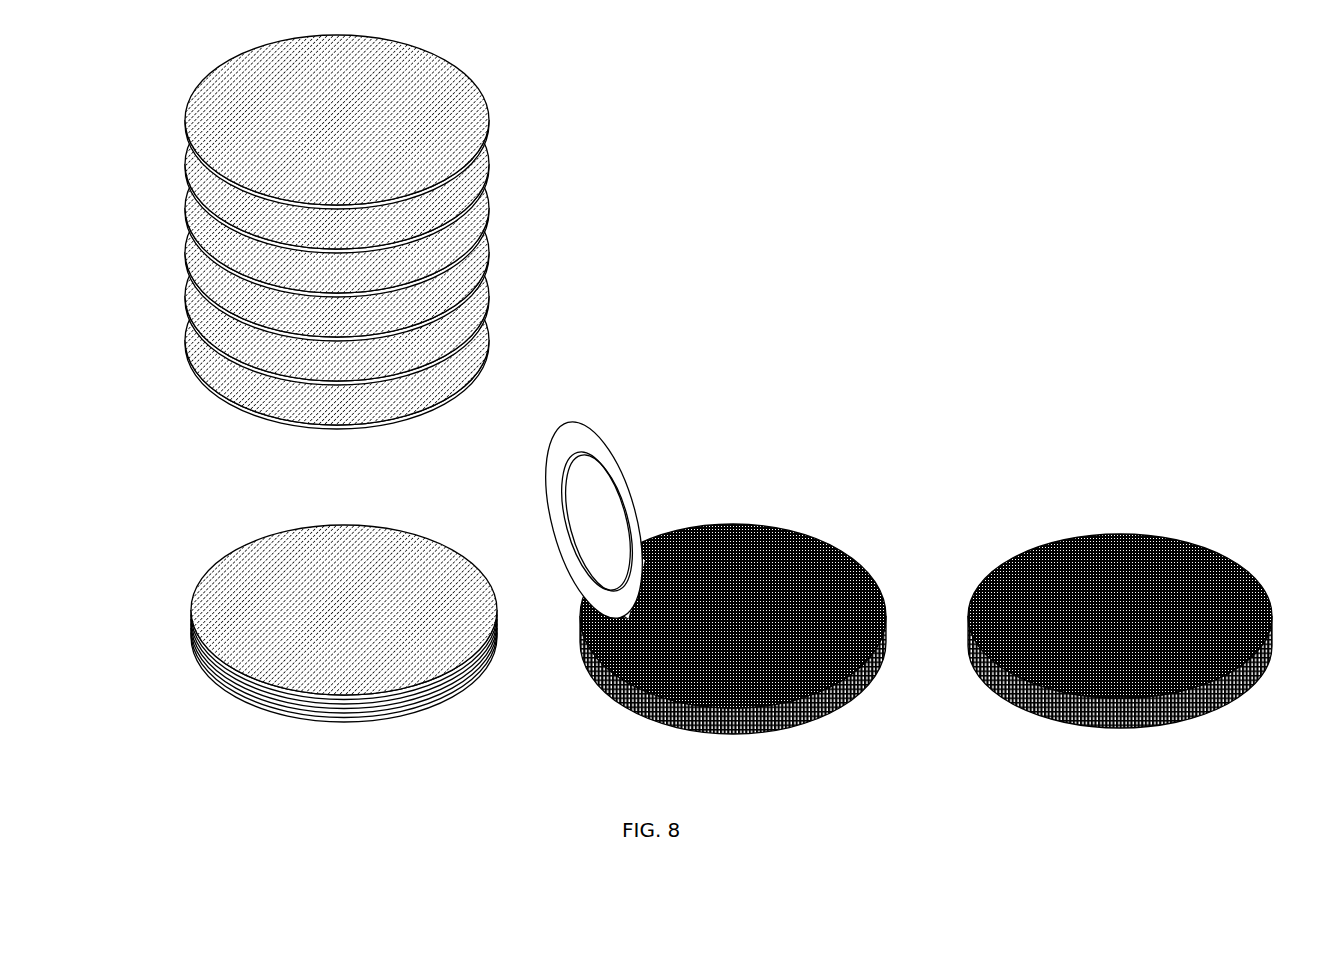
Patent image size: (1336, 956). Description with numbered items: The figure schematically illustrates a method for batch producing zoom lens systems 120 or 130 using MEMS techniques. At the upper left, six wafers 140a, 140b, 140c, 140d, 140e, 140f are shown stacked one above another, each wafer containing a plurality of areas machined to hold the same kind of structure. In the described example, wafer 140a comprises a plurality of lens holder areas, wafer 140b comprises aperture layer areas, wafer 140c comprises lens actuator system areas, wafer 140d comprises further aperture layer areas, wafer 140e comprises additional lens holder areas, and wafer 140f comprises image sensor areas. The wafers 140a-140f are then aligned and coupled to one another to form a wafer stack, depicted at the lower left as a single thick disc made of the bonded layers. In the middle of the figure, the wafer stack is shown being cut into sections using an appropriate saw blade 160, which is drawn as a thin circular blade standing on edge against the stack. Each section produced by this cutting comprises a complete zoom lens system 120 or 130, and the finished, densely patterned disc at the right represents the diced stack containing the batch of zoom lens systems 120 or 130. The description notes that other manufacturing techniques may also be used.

The wafer 140a is at (489, 108).
The wafer 140b is at (489, 163).
The wafer 140c is at (489, 211).
The wafer 140d is at (489, 253).
The wafer 140e is at (489, 292).
The wafer 140f is at (489, 339).
The saw blade 160 is at (617, 455).
The zoom lens system 120 is at (1150, 598).
The zoom lens system 130 is at (1167, 538).